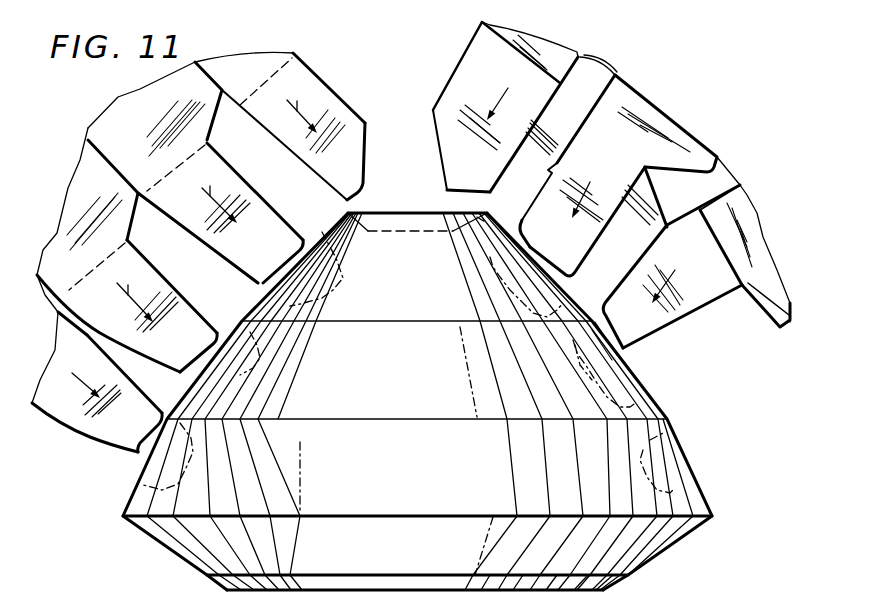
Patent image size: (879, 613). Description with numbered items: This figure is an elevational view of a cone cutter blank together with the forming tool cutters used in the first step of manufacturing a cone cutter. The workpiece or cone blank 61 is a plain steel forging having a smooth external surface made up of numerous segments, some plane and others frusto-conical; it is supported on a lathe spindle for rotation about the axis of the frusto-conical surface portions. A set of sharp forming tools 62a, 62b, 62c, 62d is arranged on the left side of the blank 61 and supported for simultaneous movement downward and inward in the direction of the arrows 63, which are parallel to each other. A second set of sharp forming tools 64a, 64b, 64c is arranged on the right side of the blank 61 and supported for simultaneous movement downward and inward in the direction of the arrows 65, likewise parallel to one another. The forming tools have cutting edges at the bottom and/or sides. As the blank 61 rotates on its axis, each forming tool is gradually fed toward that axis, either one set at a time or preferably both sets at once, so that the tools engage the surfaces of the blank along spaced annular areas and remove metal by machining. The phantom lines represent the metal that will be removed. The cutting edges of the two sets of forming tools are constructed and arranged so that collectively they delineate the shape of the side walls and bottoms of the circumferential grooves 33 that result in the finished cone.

The cone blank 61 is at (132, 534).
The forming tool 62a is at (358, 188).
The forming tool 62b is at (283, 243).
The forming tool 62c is at (202, 333).
The forming tool 62d is at (140, 428).
The arrows 63 is at (297, 101).
The forming tool 64a is at (440, 137).
The forming tool 64b is at (532, 231).
The forming tool 64c is at (617, 312).
The arrows 65 is at (500, 100).
The circumferential grooves 33 is at (634, 380).